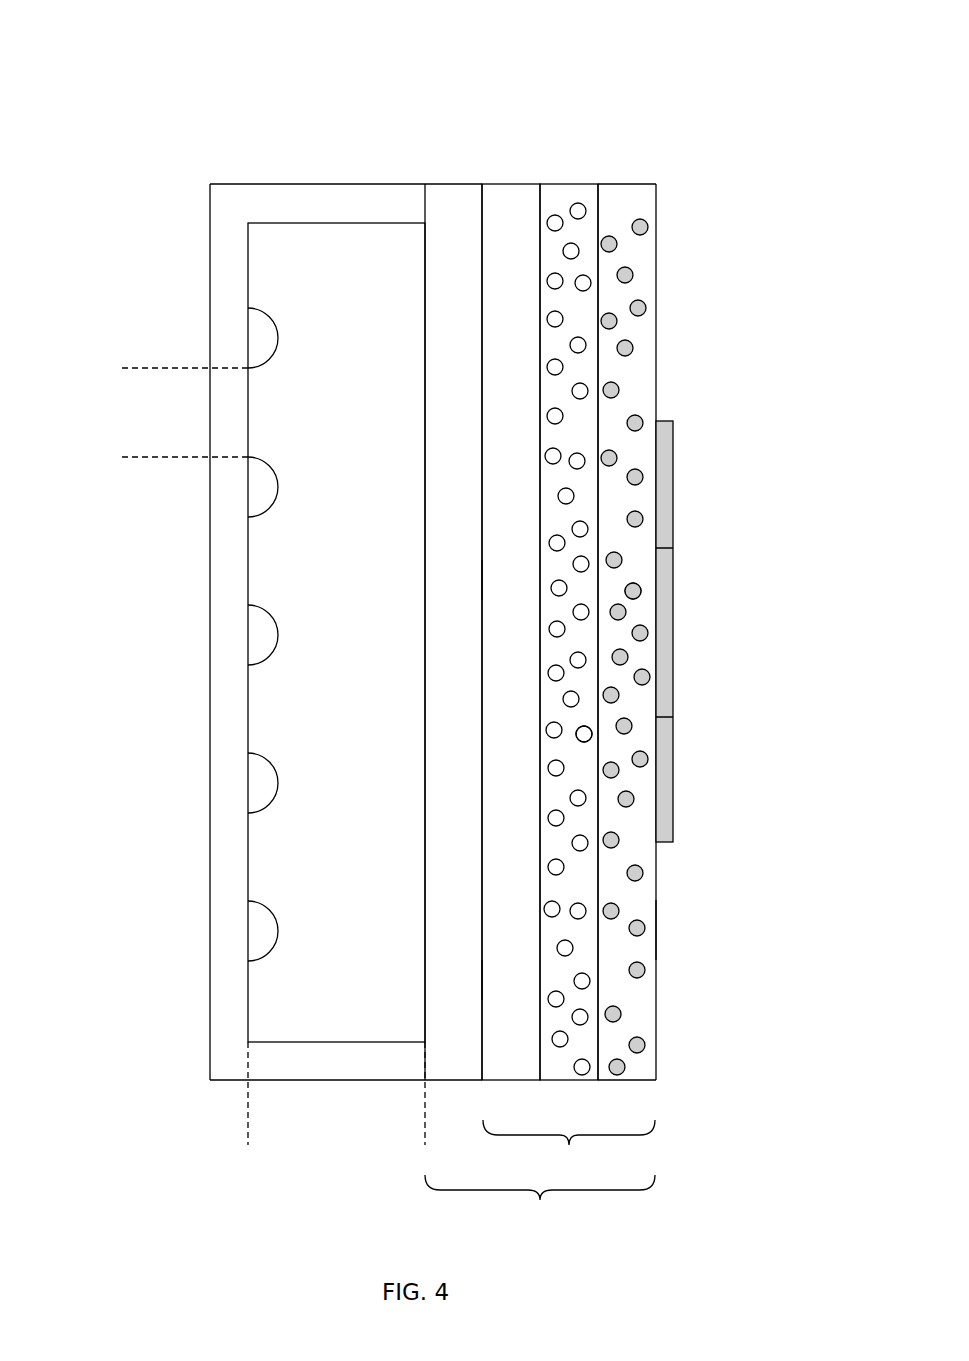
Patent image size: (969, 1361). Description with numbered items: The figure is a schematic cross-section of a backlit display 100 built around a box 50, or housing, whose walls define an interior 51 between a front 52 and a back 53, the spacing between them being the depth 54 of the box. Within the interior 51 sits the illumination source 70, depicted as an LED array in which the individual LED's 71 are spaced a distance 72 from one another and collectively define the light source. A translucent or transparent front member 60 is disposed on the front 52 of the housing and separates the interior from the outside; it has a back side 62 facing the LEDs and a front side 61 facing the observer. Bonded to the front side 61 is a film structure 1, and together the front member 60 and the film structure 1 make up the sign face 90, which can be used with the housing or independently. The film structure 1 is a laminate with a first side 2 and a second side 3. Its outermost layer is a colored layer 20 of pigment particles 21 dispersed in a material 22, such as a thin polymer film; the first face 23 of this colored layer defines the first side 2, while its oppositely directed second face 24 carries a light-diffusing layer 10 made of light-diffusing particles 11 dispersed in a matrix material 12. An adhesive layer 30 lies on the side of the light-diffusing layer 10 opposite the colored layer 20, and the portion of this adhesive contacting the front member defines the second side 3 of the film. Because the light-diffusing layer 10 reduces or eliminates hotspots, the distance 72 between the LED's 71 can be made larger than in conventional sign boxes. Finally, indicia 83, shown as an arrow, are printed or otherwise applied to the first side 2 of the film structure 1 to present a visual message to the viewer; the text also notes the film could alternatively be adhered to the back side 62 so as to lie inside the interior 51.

The backlit display 100 is at (78, 86).
The box 50 is at (293, 198).
The interior 51 is at (336, 632).
The back 53 is at (206, 762).
The back side 62 is at (420, 882).
The illumination source 70 is at (287, 310).
The LED's 71 is at (280, 628).
The distance 72 is at (142, 371).
The depth 54 is at (421, 1128).
The front member 60 is at (456, 183).
The front side 61 is at (483, 972).
The second side 3 is at (478, 1002).
The front 52 is at (490, 578).
The adhesive layer 30 is at (518, 183).
The light-diffusing layer 10 is at (578, 183).
The light-diffusing particles 11 is at (588, 391).
The matrix material 12 is at (585, 722).
The second face 24 is at (595, 242).
The colored layer 20 is at (636, 183).
The first face 23 is at (660, 262).
The pigment particles 21 is at (633, 350).
The material 22 is at (641, 612).
The first side 2 is at (660, 935).
The indicia 83 is at (676, 462).
The film structure 1 is at (569, 1146).
The sign face 90 is at (540, 1201).